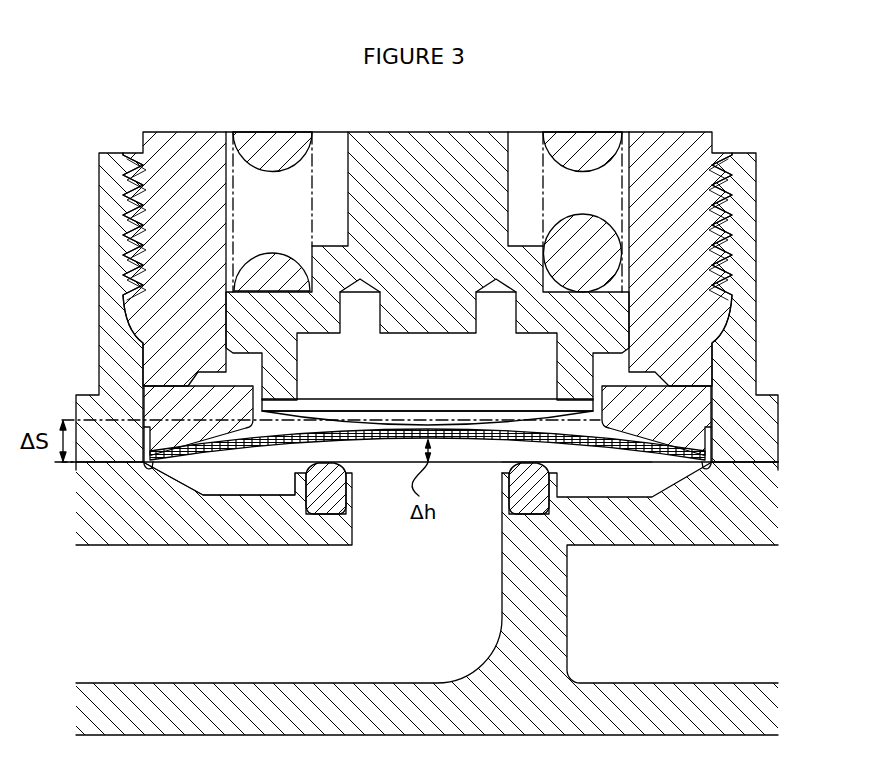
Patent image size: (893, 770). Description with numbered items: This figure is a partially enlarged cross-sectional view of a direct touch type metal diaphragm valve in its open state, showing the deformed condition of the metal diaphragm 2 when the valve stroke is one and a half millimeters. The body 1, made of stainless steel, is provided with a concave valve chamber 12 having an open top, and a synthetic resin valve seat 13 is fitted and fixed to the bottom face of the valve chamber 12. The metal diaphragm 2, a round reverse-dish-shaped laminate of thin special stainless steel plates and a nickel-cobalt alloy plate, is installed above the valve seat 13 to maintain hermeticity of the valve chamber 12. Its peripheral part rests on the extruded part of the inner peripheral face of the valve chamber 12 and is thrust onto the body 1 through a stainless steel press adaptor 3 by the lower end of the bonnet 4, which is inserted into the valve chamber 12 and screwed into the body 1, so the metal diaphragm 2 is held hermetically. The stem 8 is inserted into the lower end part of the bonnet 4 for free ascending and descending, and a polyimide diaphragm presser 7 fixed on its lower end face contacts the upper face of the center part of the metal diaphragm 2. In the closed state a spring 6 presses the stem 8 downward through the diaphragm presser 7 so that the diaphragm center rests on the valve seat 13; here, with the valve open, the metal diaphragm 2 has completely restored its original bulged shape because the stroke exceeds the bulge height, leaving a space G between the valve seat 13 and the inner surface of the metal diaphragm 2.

The body 1 is at (140, 500).
The metal diaphragm 2 is at (380, 441).
The press adaptor 3 is at (672, 414).
The bonnet 4 is at (193, 232).
The spring 6 is at (572, 240).
The diaphragm presser 7 is at (472, 413).
The stem 8 is at (430, 215).
The valve chamber 12 is at (253, 478).
The valve seat 13 is at (327, 500).
The space G is at (533, 450).